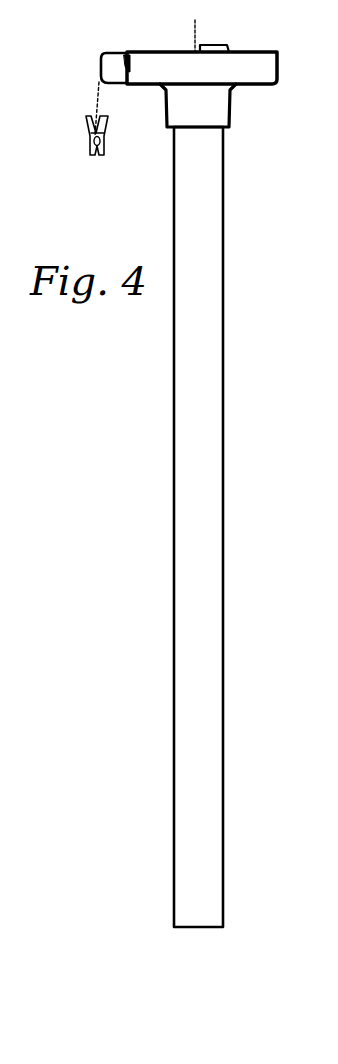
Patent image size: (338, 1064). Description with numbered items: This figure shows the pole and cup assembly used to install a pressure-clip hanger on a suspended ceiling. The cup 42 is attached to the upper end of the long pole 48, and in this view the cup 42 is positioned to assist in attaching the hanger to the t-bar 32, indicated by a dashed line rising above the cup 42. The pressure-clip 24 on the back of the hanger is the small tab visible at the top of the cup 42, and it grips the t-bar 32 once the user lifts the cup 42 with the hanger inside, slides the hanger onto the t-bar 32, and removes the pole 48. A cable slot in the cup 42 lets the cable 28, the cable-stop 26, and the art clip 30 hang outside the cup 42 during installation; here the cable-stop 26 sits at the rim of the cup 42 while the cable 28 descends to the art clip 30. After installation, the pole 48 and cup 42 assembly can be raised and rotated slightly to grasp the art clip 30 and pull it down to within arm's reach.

The pressure-clip 24 is at (232, 40).
The cable-stop 26 is at (97, 57).
The cable 28 is at (89, 95).
The art clip 30 is at (79, 143).
The t-bar 32 is at (187, 22).
The cup 42 is at (280, 78).
The pole 48 is at (224, 222).